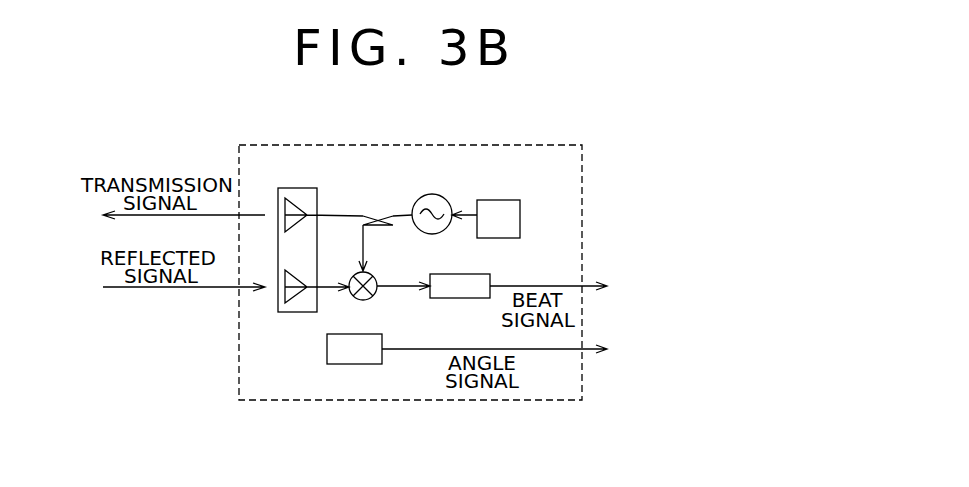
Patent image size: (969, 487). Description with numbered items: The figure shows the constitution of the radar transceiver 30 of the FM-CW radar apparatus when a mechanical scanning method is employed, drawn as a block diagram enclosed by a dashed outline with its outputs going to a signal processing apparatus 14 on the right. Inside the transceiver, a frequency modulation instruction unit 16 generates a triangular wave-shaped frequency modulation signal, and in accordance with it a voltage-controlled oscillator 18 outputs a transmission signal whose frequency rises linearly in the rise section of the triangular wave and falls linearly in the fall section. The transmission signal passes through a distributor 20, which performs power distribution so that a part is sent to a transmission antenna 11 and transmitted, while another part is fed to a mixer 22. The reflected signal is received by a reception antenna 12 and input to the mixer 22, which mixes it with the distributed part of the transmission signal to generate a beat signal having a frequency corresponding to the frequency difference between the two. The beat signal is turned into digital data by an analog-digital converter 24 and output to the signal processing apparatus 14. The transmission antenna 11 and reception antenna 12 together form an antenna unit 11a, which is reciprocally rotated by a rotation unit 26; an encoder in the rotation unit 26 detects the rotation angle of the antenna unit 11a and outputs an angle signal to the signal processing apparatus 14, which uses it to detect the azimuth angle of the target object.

The radar transceiver 30 is at (238, 150).
The transmission antenna 11 is at (315, 189).
The antenna unit 11a is at (283, 188).
The reception antenna 12 is at (300, 303).
The signal processing apparatus 14 is at (698, 313).
The frequency modulation instruction unit 16 is at (491, 200).
The voltage-controlled oscillator 18 is at (446, 231).
The distributor 20 is at (368, 214).
The mixer 22 is at (374, 294).
The analog-digital converter 24 is at (453, 298).
The rotation unit 26 is at (336, 364).